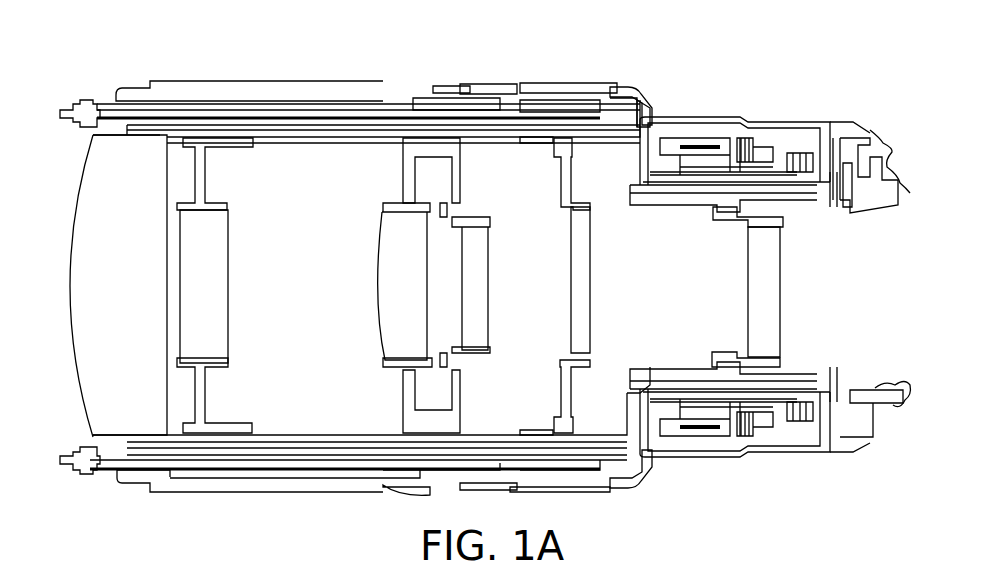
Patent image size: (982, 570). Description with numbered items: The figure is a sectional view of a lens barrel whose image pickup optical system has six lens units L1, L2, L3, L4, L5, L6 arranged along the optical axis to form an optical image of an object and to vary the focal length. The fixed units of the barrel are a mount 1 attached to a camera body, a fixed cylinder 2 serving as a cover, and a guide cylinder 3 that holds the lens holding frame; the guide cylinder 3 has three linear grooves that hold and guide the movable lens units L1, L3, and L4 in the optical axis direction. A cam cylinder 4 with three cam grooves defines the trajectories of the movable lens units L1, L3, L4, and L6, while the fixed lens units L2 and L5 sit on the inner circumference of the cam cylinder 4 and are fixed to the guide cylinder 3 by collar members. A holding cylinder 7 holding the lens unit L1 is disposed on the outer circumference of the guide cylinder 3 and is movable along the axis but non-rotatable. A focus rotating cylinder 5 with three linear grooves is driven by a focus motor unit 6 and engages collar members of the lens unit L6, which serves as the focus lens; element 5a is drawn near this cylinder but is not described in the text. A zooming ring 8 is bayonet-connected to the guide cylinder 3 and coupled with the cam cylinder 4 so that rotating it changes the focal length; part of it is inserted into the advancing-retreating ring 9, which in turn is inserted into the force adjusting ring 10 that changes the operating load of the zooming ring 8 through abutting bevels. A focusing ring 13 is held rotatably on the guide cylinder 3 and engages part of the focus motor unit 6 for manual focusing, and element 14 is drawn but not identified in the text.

The mount 1 is at (872, 287).
The fixed cylinder 2 is at (790, 123).
The guide cylinder 3 is at (642, 122).
The cam cylinder 4 is at (484, 135).
The focus rotating cylinder 5 is at (795, 193).
The connector 5a is at (777, 383).
The focus motor unit 6 is at (757, 140).
The holding cylinder 7 is at (175, 110).
The zooming ring 8 is at (393, 88).
The advancing-retreating ring 9 is at (446, 88).
The force adjusting ring 10 is at (498, 85).
The focusing ring 13 is at (616, 88).
The lens holder 14 is at (425, 185).
The lens unit L1 is at (98, 230).
The lens unit L2 is at (220, 245).
The lens unit L3 is at (395, 260).
The lens unit L4 is at (475, 280).
The lens unit L5 is at (582, 282).
The lens unit L6 is at (770, 292).